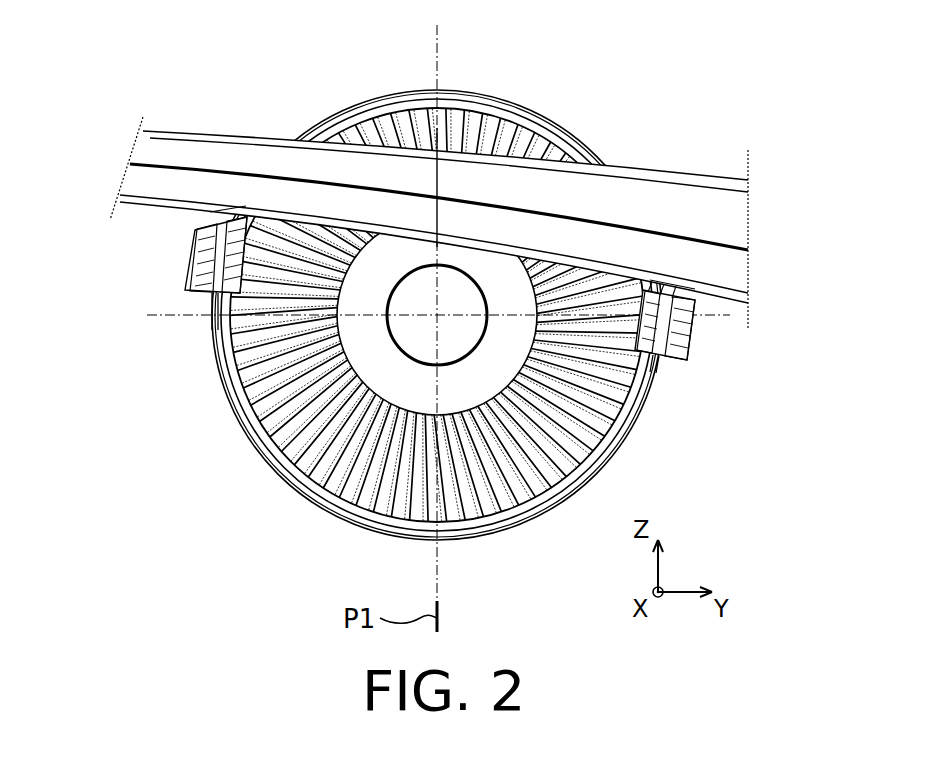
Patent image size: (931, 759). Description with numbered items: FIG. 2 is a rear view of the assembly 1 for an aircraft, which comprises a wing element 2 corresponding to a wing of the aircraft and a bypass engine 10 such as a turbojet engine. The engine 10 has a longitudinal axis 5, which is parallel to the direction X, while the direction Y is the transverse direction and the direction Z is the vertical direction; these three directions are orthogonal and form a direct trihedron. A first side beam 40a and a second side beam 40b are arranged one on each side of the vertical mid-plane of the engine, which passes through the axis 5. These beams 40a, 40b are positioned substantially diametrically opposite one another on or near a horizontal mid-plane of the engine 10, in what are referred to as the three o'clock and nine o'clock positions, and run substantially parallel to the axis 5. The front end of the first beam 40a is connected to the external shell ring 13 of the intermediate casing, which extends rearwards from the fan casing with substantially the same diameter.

The assembly 1 is at (430, 311).
The wing element 2 is at (750, 218).
The longitudinal axis 5 is at (437, 315).
The bypass engine 10 is at (438, 312).
The external shell ring 13 is at (322, 508).
The first side beam 40a is at (193, 255).
The second side beam 40b is at (687, 335).